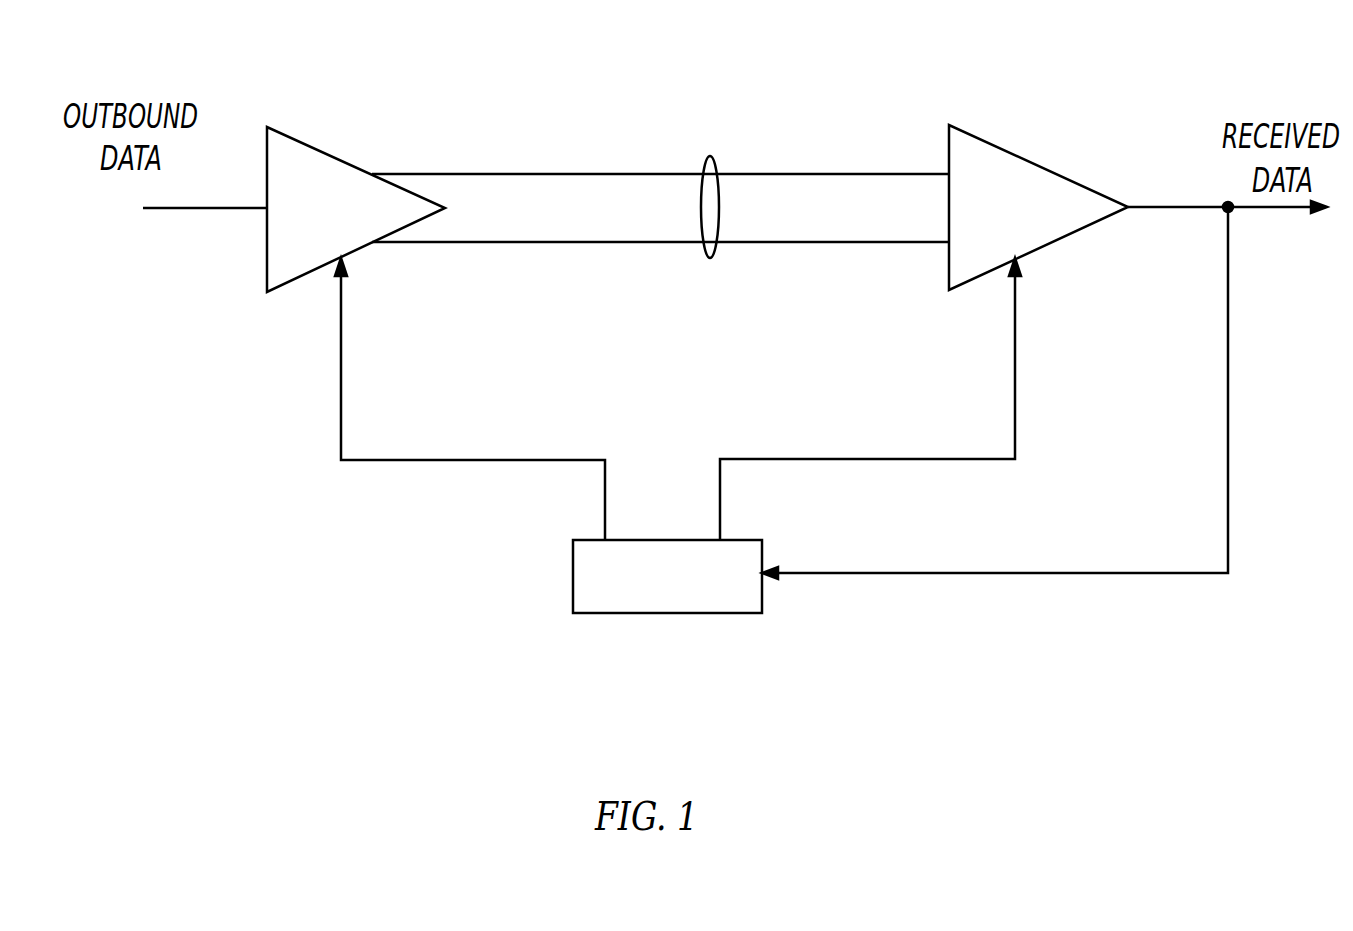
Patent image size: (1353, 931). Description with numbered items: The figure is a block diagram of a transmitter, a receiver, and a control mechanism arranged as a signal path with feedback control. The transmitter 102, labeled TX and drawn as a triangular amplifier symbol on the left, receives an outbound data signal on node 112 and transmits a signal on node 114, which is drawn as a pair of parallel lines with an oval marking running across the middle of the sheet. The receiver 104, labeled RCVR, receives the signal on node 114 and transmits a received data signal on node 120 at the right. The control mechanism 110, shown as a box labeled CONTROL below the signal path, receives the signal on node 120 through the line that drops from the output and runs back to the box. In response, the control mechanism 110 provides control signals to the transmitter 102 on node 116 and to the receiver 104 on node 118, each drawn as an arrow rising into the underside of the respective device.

The transmitter 102 is at (323, 148).
The receiver 104 is at (1013, 148).
The control mechanism 110 is at (670, 614).
The node 112 is at (232, 209).
The node 114 is at (709, 157).
The node 116 is at (398, 459).
The node 118 is at (802, 458).
The node 120 is at (925, 572).